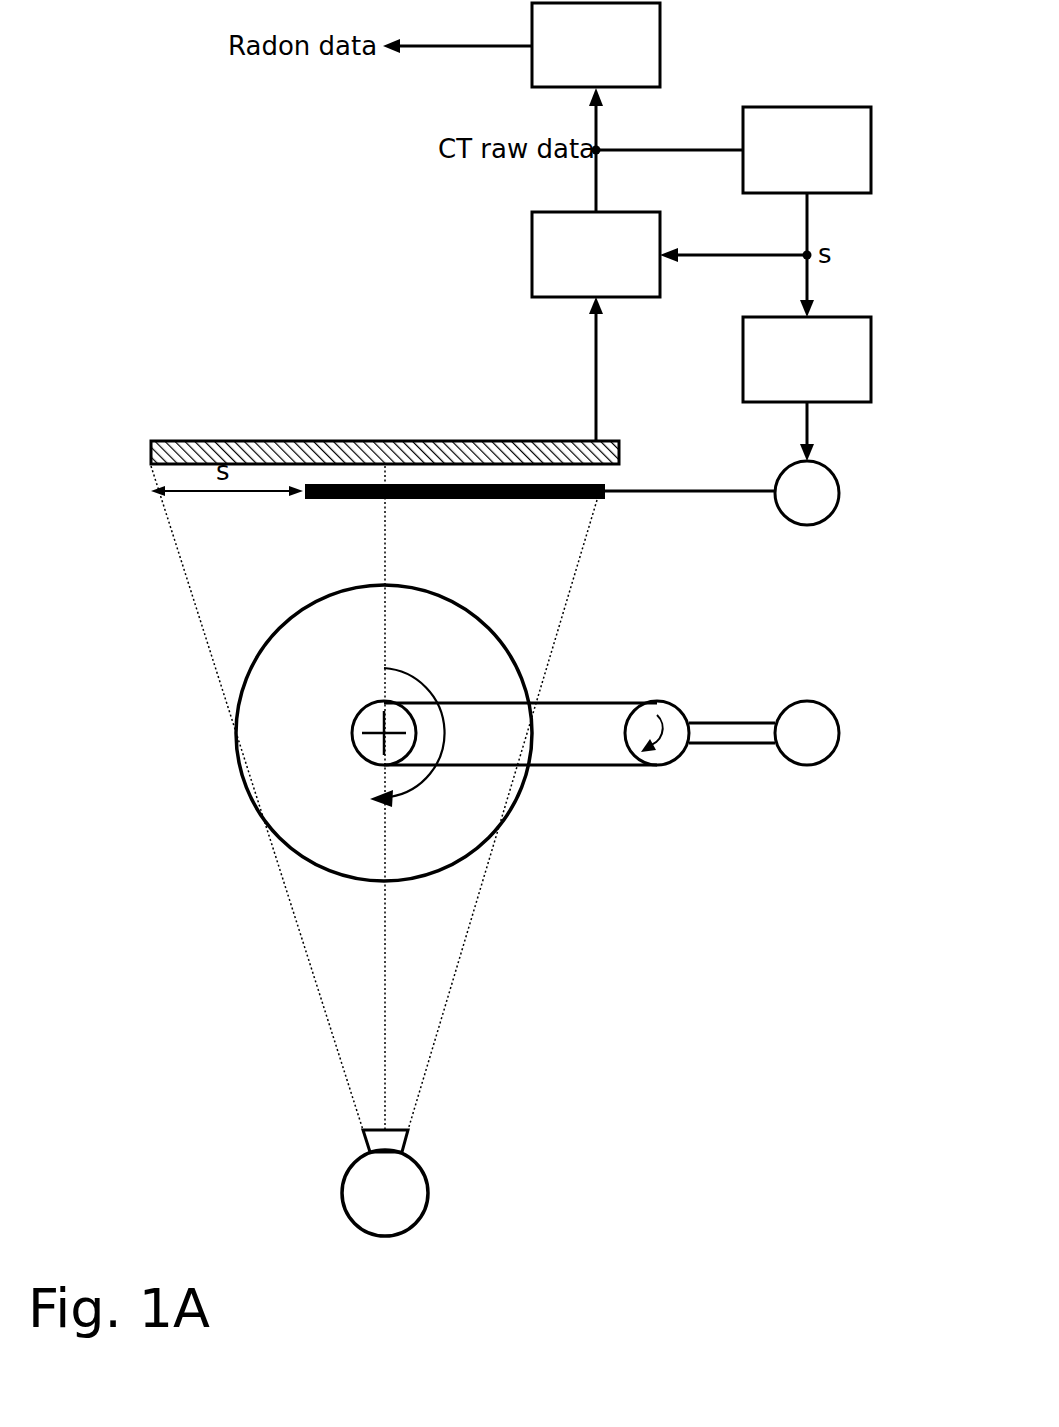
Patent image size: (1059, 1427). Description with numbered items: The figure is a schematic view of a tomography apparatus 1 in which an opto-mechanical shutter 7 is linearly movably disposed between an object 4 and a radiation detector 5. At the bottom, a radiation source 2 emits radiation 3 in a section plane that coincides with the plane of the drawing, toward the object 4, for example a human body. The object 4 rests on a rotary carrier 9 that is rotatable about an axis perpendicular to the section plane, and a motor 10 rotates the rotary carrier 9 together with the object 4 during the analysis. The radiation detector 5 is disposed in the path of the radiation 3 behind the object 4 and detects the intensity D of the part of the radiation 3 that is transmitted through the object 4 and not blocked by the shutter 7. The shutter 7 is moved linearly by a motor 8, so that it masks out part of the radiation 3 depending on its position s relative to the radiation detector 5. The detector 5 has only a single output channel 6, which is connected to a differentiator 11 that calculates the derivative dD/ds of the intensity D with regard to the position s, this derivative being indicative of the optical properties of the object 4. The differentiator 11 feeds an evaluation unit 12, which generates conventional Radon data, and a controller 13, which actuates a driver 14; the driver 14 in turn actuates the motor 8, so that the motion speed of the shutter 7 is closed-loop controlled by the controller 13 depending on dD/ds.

The tomography apparatus 1 is at (628, 996).
The radiation source 2 is at (428, 1193).
The radiation 3 is at (428, 1068).
The object 4 is at (340, 638).
The radiation detector 5 is at (185, 441).
The single output channel 6 is at (596, 410).
The opto-mechanical shutter 7 is at (485, 500).
The motor 8 is at (838, 505).
The rotary carrier 9 is at (240, 773).
The motor 10 is at (838, 733).
The differentiator 11 is at (532, 255).
The evaluation unit 12 is at (660, 22).
The controller 13 is at (743, 173).
The driver 14 is at (743, 360).